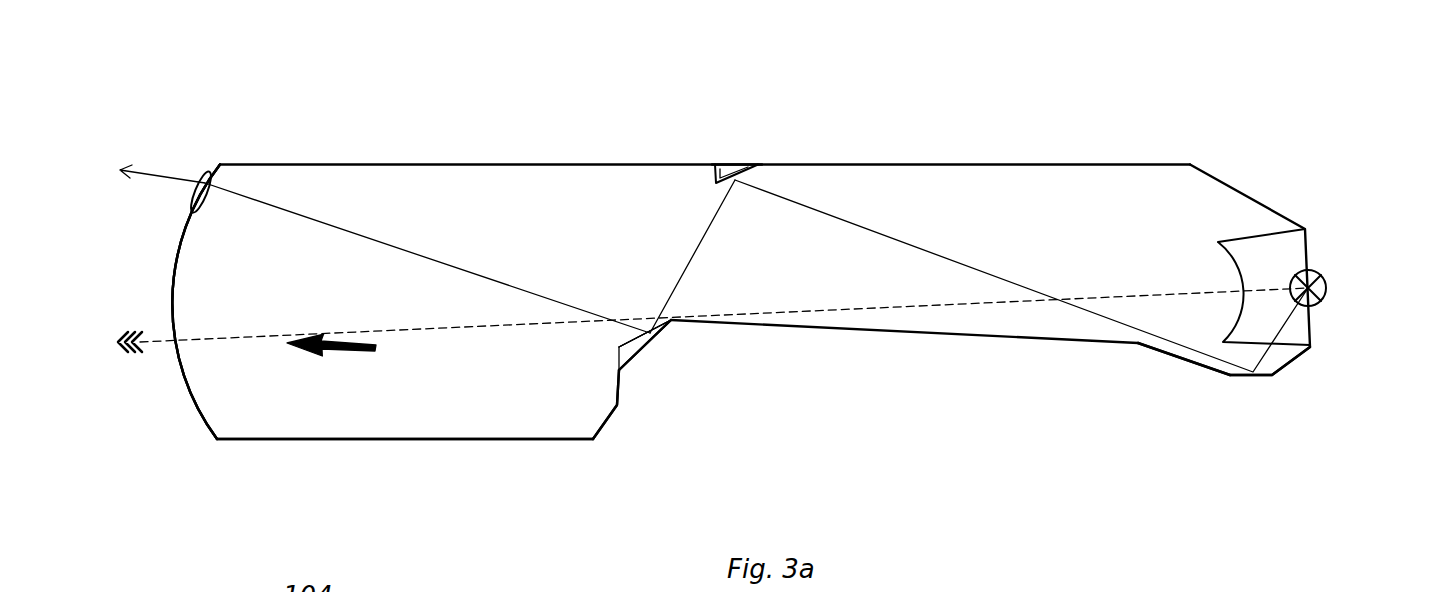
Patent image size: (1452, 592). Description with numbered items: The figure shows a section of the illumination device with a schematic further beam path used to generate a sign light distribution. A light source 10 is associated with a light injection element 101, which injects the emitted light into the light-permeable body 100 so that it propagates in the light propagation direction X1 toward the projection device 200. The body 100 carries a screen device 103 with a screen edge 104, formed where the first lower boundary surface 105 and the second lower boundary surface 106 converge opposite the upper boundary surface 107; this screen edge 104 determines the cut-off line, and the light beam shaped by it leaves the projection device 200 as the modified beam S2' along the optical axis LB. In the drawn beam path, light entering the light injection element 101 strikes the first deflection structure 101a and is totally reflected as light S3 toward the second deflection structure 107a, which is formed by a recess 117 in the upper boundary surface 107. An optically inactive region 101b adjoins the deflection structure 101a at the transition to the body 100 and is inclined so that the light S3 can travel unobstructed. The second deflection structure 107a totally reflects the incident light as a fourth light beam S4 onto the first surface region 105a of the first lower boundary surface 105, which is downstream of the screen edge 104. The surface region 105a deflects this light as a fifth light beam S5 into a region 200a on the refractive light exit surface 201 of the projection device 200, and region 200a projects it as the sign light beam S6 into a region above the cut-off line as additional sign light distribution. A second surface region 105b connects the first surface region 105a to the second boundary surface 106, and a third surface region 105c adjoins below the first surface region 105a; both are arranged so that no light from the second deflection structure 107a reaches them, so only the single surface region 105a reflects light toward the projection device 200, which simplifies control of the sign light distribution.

The light source 10 is at (1308, 270).
The light-permeable body 100 is at (877, 197).
The light injection element 101 is at (1195, 183).
The first deflection structure 101a is at (1275, 388).
The optically inactive region 101b is at (1157, 357).
The screen device 103 is at (597, 363).
The screen edge 104 is at (670, 320).
The first lower boundary surface 105 is at (694, 322).
The first surface region 105a is at (650, 333).
The second surface region 105b is at (650, 333).
The third surface region 105c is at (620, 387).
The second lower boundary surface 106 is at (723, 324).
The upper boundary surface 107 is at (930, 164).
The second deflection structure 107a is at (745, 180).
The recess 117 is at (724, 164).
The projection device 200 is at (228, 272).
The region of the projection device 200a is at (207, 175).
The refractive light exit surface 201 is at (173, 283).
The totally reflected light S3 is at (963, 260).
The fourth light beam S4 is at (705, 228).
The fifth light beam S5 is at (362, 228).
The sign light light beam S6 is at (135, 168).
The light beam S2' is at (140, 381).
The light beam axis LB is at (693, 324).
The light propagation direction X1 is at (332, 357).